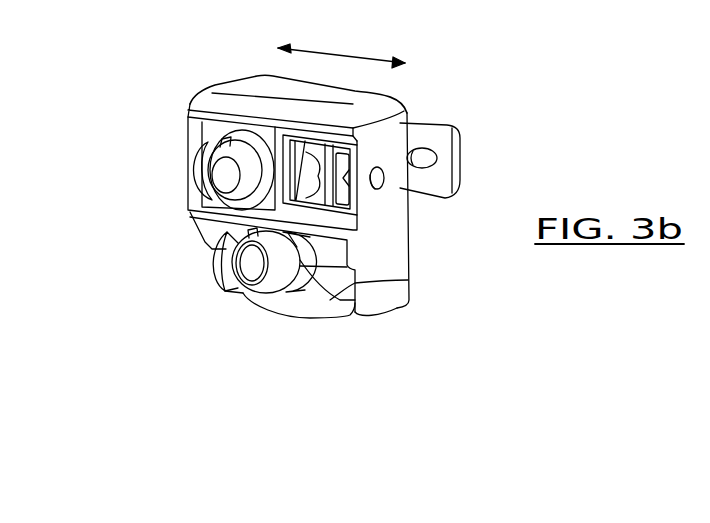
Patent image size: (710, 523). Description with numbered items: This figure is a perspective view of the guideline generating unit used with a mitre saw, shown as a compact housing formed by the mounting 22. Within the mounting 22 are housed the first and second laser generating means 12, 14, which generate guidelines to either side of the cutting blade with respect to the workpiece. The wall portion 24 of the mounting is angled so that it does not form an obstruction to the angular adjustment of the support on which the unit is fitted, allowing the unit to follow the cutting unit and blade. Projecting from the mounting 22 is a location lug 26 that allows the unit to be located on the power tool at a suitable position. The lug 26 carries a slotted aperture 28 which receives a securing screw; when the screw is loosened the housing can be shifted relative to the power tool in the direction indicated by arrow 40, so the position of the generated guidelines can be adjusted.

The first laser generating means 12 is at (225, 175).
The second laser generating means 14 is at (407, 282).
The mounting 22 is at (391, 233).
The wall portion 24 is at (235, 302).
The location lugs 26 is at (460, 160).
The slotted apertures 28 is at (422, 153).
The arrow 40 is at (342, 54).